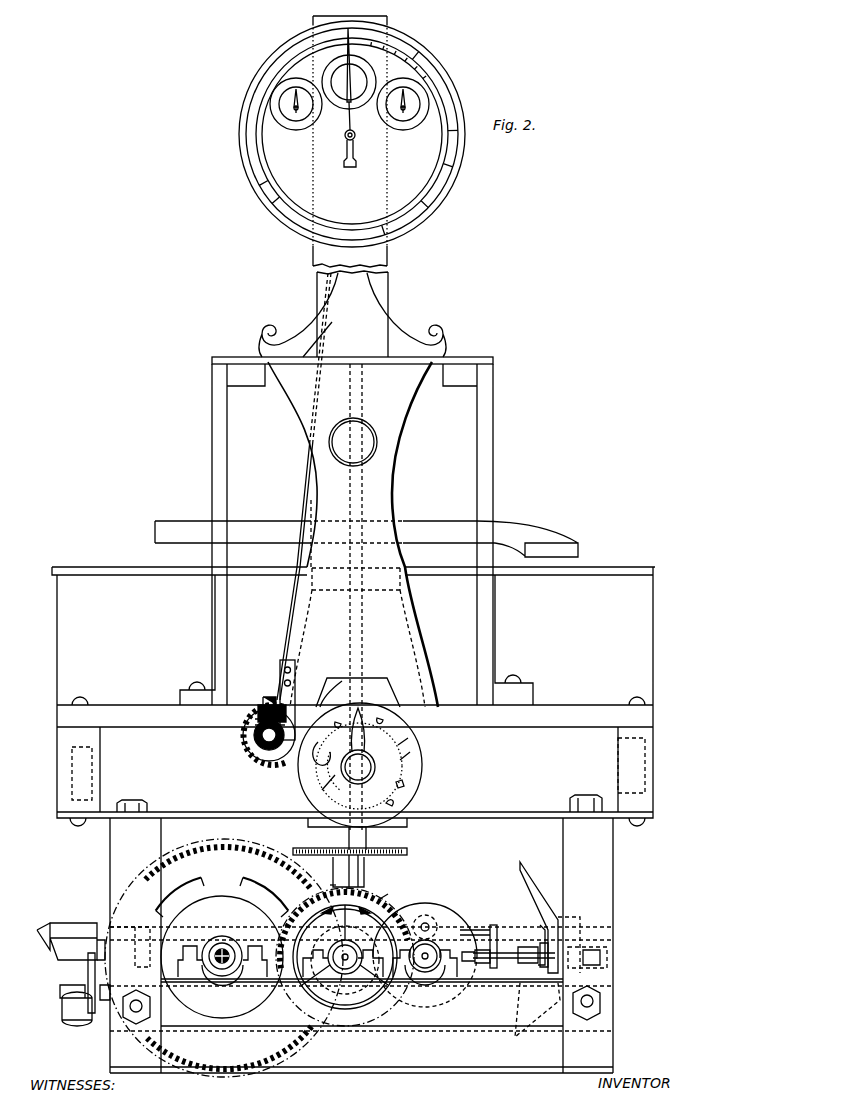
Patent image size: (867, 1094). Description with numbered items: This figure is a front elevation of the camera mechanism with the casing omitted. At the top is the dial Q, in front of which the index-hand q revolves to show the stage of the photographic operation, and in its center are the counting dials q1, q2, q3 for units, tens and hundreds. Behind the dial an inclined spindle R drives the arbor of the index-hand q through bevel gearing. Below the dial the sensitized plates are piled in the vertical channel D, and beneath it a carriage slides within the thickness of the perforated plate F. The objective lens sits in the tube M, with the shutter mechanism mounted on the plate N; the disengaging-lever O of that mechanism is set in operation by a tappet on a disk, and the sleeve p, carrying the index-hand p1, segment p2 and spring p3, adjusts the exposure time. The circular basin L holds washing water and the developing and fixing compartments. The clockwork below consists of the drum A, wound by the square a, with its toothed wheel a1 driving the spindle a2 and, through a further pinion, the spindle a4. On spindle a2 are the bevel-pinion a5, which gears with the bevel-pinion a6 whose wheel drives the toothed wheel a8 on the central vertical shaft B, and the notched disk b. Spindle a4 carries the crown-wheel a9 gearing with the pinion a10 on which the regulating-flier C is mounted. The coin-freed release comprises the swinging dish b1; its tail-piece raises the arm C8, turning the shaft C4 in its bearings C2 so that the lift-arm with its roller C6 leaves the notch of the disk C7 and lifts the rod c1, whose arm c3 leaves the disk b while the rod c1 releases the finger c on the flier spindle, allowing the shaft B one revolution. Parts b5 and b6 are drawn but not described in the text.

The dial Q is at (352, 141).
The index-hand q is at (355, 97).
The units dial q1 is at (403, 110).
The tens dial q2 is at (349, 86).
The hundreds dial q3 is at (296, 110).
The vertical channel or shaft D is at (352, 314).
The inclined spindle R is at (306, 486).
The plate F is at (352, 524).
The plate N is at (353, 596).
The tube M is at (353, 442).
The circular basin L is at (353, 636).
The disengaging-lever O is at (358, 692).
The sleeve p is at (360, 765).
The index-hand p1 is at (255, 728).
The segment p2 is at (255, 742).
The spring p3 is at (269, 712).
The central vertical shaft B is at (364, 842).
The disk b is at (352, 721).
The stop b5 is at (396, 805).
The stop b6 is at (407, 777).
The toothed wheel a1 is at (224, 958).
The roller or drum A is at (222, 948).
The square a is at (228, 948).
The spindle a2 is at (345, 957).
The spindle a4 is at (425, 962).
The bevel-pinion a5 is at (396, 908).
The bevel-pinion a6 is at (330, 886).
The toothed wheel a8 is at (351, 867).
The crown-wheel a9 is at (425, 920).
The pinion a10 is at (480, 946).
The finger c is at (514, 943).
The rod c1 is at (478, 938).
The arm c3 is at (389, 890).
The regulating-flier C is at (537, 955).
The pivot bearing C2 is at (580, 920).
The shaft C4 is at (508, 925).
The roller C6 is at (440, 908).
The disk C7 is at (432, 980).
The arm C8 is at (85, 975).
The swinging plate or dish b1 is at (71, 958).